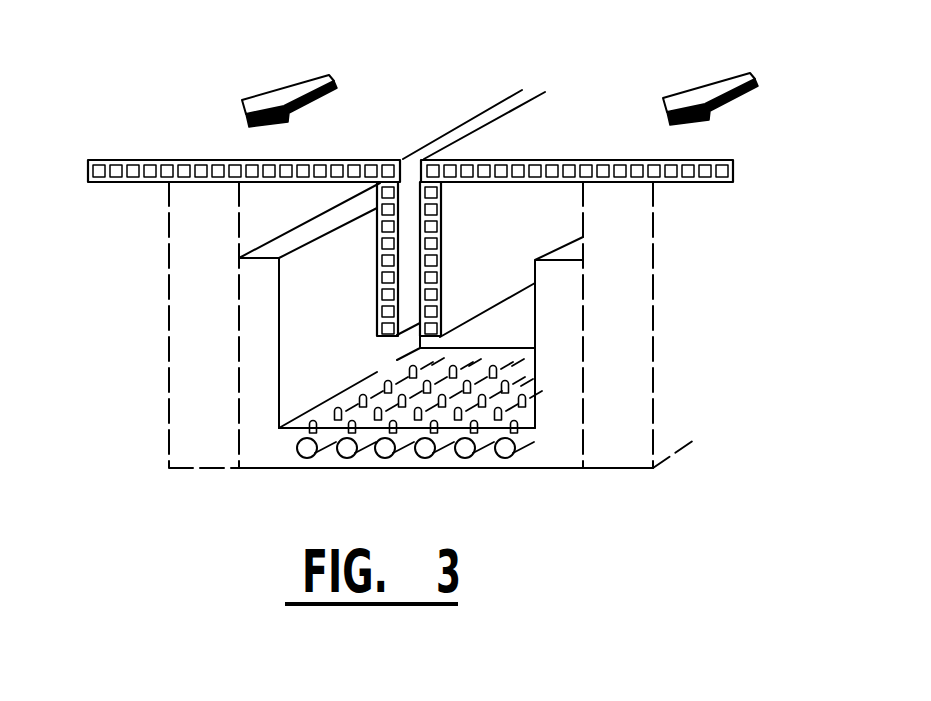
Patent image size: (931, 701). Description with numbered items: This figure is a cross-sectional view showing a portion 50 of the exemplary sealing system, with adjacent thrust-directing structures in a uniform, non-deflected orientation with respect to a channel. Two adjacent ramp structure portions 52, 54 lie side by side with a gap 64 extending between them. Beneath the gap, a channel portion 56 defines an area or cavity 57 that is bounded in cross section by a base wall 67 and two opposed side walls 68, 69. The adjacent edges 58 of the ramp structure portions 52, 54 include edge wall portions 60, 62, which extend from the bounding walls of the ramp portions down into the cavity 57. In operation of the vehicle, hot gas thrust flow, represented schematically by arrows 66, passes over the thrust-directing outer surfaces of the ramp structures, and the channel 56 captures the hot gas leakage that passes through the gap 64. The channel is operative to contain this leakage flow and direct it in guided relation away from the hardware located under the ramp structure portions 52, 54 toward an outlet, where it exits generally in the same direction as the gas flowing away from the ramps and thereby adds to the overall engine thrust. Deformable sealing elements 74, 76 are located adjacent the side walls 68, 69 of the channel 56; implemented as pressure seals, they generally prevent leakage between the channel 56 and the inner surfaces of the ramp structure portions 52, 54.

The portion of the sealing system 50 is at (222, 500).
The ramp structure portion 52 is at (380, 137).
The ramp structure portion 54 is at (593, 133).
The channel portion 56 is at (560, 315).
The cavity 57 is at (488, 330).
The adjacent edges 58 is at (362, 306).
The edge wall portion 60 is at (374, 272).
The edge wall portion 62 is at (441, 244).
The gap 64 is at (410, 180).
The arrows 66 is at (283, 84).
The base wall 67 is at (553, 450).
The side wall 68 is at (263, 429).
The side wall 69 is at (556, 413).
The deformable sealing element 74 is at (192, 318).
The deformable sealing element 76 is at (607, 322).